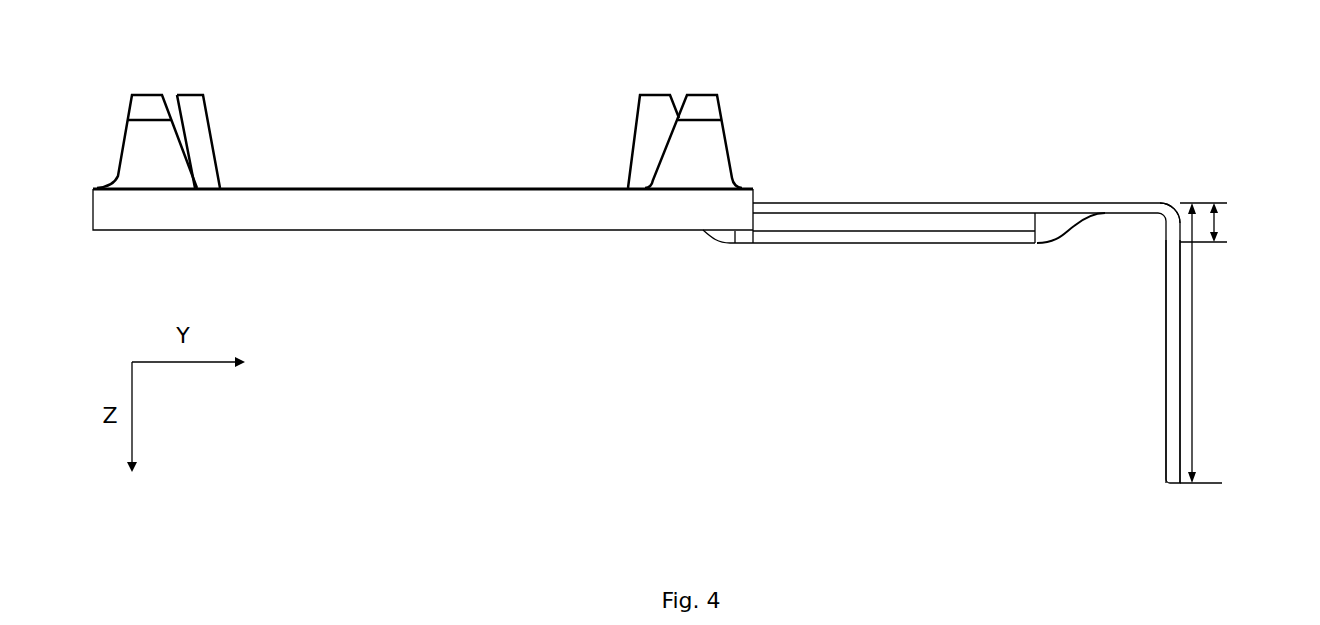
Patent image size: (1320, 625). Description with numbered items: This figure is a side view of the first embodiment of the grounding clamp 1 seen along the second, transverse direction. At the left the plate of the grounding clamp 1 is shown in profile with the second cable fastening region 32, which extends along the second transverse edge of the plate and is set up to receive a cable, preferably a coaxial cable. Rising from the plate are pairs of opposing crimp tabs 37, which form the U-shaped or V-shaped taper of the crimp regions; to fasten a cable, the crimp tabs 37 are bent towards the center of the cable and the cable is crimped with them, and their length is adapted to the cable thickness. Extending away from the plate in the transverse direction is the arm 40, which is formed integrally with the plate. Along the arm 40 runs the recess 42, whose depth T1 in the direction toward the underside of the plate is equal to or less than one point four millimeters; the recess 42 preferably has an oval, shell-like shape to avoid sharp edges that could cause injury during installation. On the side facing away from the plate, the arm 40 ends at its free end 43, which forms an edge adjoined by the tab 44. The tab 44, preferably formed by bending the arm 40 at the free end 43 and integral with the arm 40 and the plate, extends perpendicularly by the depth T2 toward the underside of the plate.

The grounding clamp 1 is at (932, 28).
The second cable fastening region 32 is at (422, 213).
The crimp tabs 37 is at (146, 148).
The arm 40 is at (870, 203).
The recess 42 is at (935, 243).
The free end 43 is at (1160, 202).
The tab 44 is at (1163, 355).
The depth of the recess T1 is at (1232, 210).
The depth of the tab T2 is at (1195, 410).